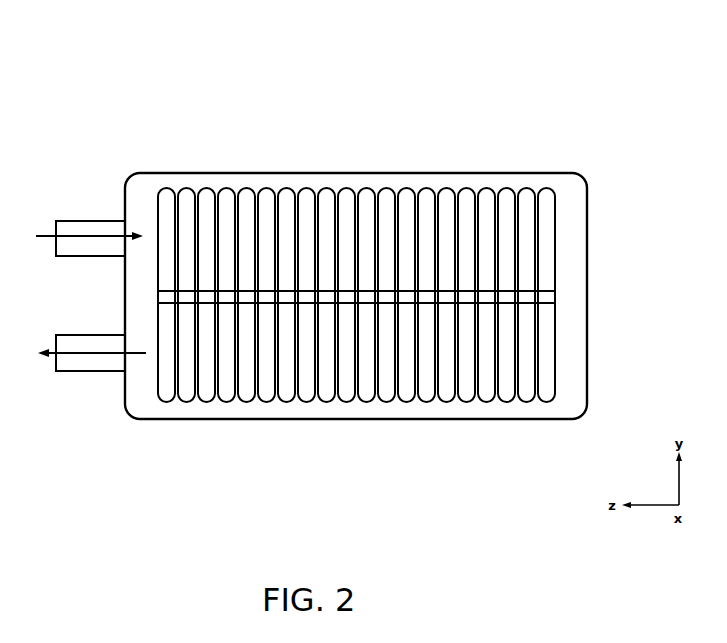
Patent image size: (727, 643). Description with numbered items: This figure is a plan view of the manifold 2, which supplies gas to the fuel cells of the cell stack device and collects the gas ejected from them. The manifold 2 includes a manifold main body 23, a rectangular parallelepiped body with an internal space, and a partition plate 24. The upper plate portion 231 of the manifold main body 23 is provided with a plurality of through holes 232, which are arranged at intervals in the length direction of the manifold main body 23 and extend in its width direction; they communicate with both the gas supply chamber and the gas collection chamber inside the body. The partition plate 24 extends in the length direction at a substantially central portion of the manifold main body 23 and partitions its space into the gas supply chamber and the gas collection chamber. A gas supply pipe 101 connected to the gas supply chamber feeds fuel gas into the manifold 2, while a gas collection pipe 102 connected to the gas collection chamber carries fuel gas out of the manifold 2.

The manifold 2 is at (433, 112).
The manifold main body 23 is at (555, 172).
The upper plate portion 231 is at (148, 180).
The through holes 232 is at (213, 212).
The partition plate 24 is at (222, 305).
The gas supply pipe 101 is at (77, 220).
The gas collection pipe 102 is at (77, 372).